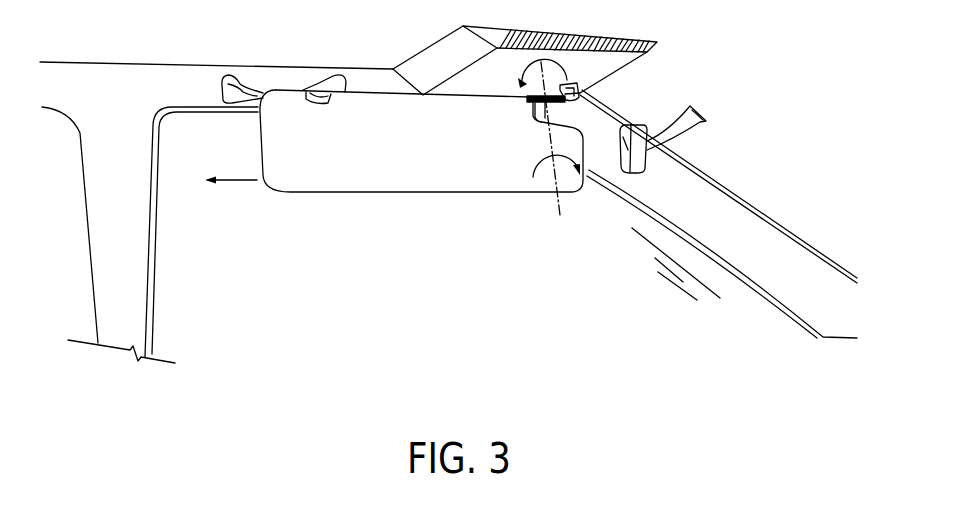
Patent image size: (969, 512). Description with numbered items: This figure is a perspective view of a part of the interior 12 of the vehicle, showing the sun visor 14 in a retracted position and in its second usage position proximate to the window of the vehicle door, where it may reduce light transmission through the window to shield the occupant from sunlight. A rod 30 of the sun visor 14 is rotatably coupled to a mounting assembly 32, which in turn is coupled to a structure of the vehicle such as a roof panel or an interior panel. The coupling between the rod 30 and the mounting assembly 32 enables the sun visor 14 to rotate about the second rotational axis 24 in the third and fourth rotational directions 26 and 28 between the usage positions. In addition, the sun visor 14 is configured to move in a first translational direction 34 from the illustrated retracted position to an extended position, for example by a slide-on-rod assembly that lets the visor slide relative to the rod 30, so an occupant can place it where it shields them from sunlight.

The interior 12 is at (214, 136).
The sun visor 14 is at (432, 192).
The second rotational axis 24 is at (555, 204).
The third rotational direction 26 is at (522, 72).
The fourth rotational direction 28 is at (543, 163).
The rod 30 is at (536, 117).
The mounting assembly 32 is at (562, 100).
The first translational direction 34 is at (238, 181).